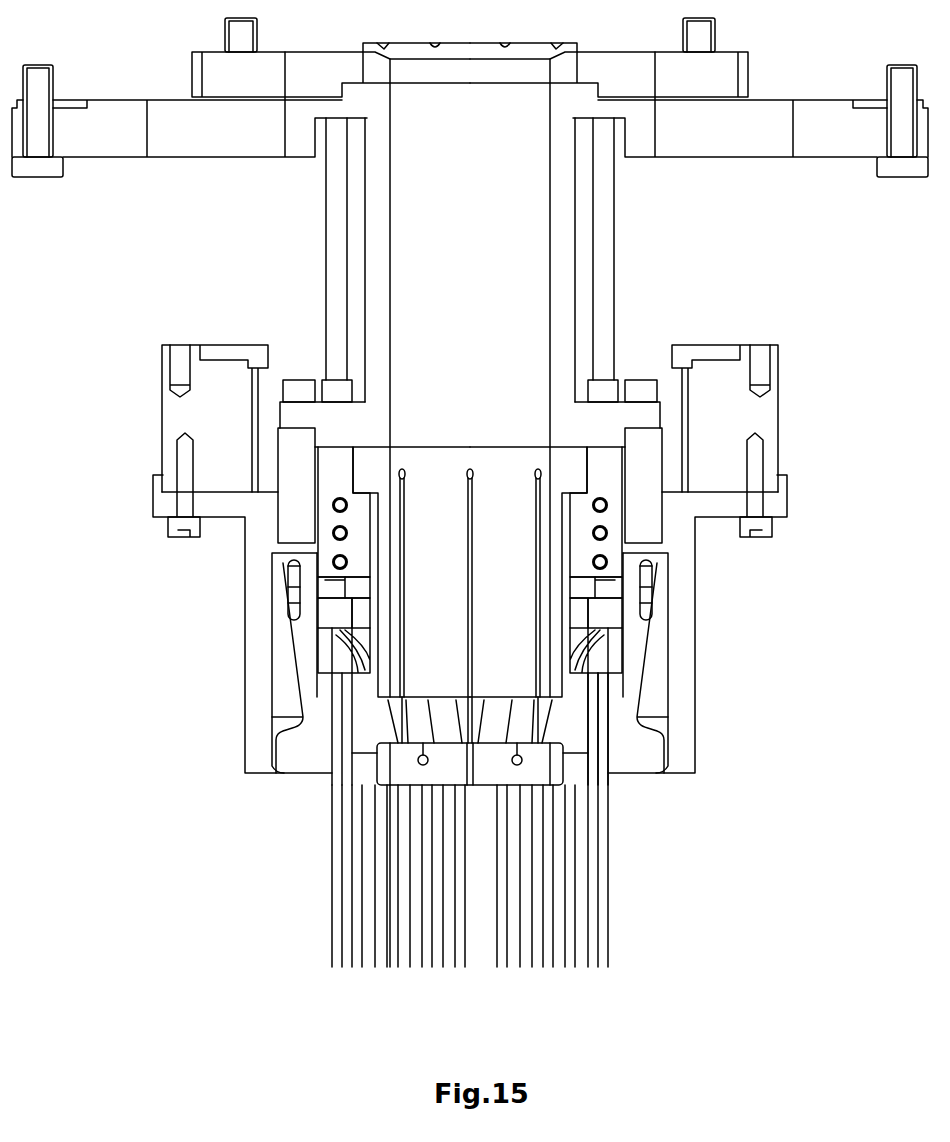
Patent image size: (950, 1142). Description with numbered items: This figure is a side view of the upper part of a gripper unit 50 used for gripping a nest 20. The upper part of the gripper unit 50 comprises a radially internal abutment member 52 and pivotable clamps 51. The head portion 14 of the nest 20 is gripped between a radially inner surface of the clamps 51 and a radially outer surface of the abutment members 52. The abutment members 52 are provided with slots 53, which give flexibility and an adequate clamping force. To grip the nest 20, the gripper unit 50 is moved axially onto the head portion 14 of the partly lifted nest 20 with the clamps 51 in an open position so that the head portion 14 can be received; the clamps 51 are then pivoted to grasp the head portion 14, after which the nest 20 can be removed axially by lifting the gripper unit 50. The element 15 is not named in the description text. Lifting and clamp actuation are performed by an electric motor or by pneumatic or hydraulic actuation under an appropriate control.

The head portion 14 is at (737, 695).
The cable 15 is at (600, 853).
The nest 20 is at (652, 942).
The gripper unit 50 is at (157, 757).
The pivotable clamps 51 is at (297, 752).
The abutment member 52 is at (367, 740).
The slots 53 is at (431, 447).